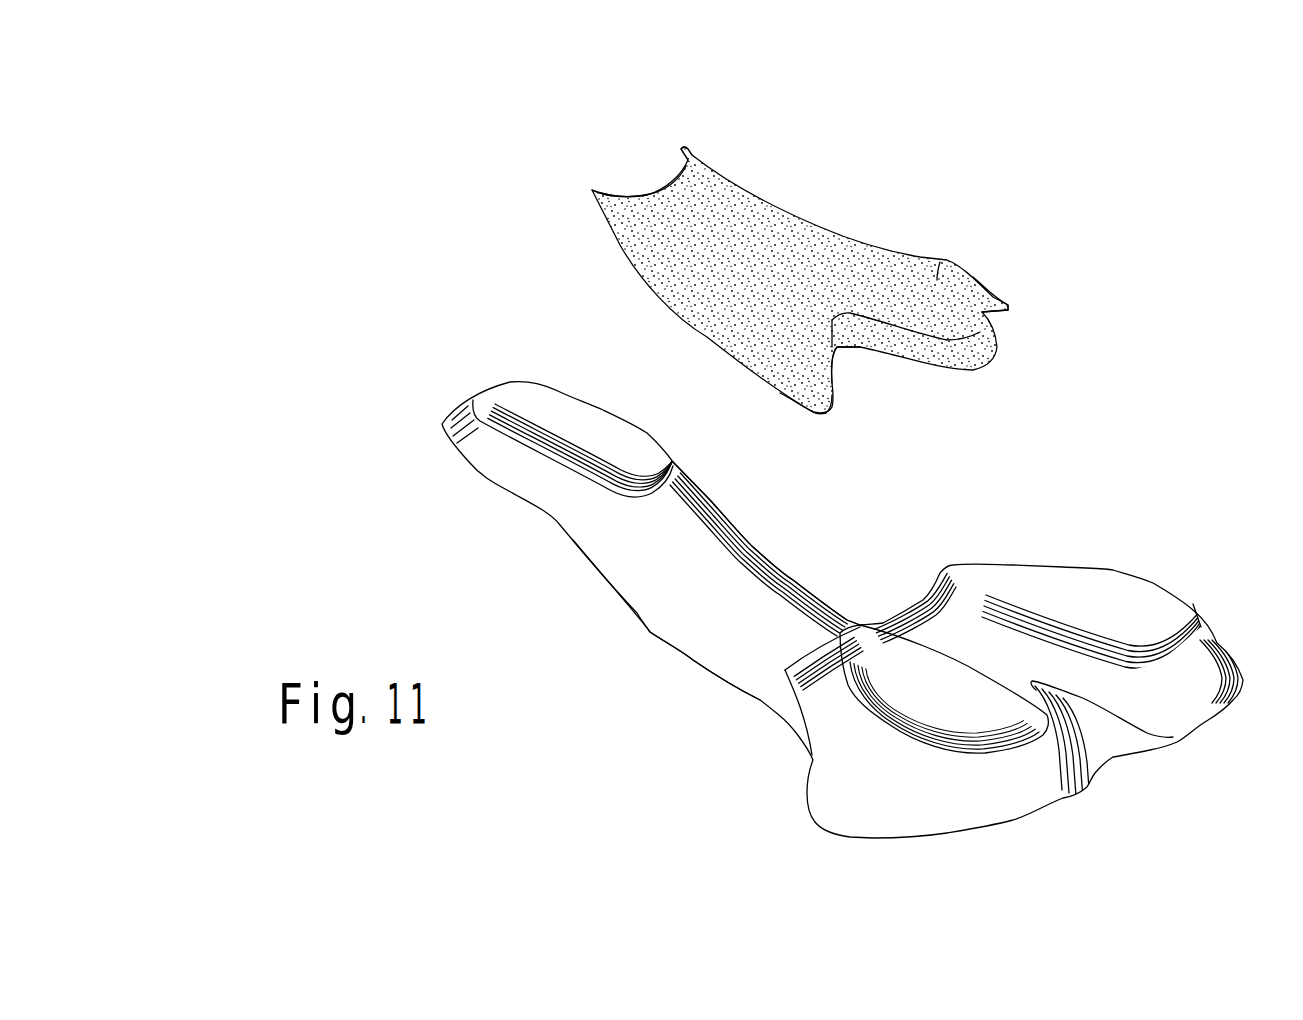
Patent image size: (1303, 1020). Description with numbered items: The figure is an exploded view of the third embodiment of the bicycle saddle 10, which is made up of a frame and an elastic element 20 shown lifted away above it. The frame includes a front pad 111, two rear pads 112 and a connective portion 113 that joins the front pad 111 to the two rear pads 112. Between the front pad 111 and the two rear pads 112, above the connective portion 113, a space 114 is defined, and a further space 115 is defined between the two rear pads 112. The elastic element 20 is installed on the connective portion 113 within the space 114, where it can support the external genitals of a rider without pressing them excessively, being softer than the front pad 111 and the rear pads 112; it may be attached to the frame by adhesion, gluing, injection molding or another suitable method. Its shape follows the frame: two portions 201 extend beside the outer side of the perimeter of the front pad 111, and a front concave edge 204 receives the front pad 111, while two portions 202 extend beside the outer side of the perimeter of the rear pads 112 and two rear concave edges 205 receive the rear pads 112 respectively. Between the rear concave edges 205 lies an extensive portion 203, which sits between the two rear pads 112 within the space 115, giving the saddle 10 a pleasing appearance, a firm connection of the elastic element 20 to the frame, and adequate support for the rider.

The bicycle saddle 10 is at (1047, 522).
The elastic element 20 is at (813, 237).
The front pad 111 is at (545, 413).
The rear pads 112 is at (1138, 603).
The connective portion 113 is at (707, 640).
The space 114 is at (797, 577).
The space 115 is at (1007, 667).
The portions 201 is at (590, 192).
The portions 202 is at (987, 300).
The extensive portion 203 is at (963, 327).
The front concave edge 204 is at (663, 188).
The rear concave edges 205 is at (842, 348).